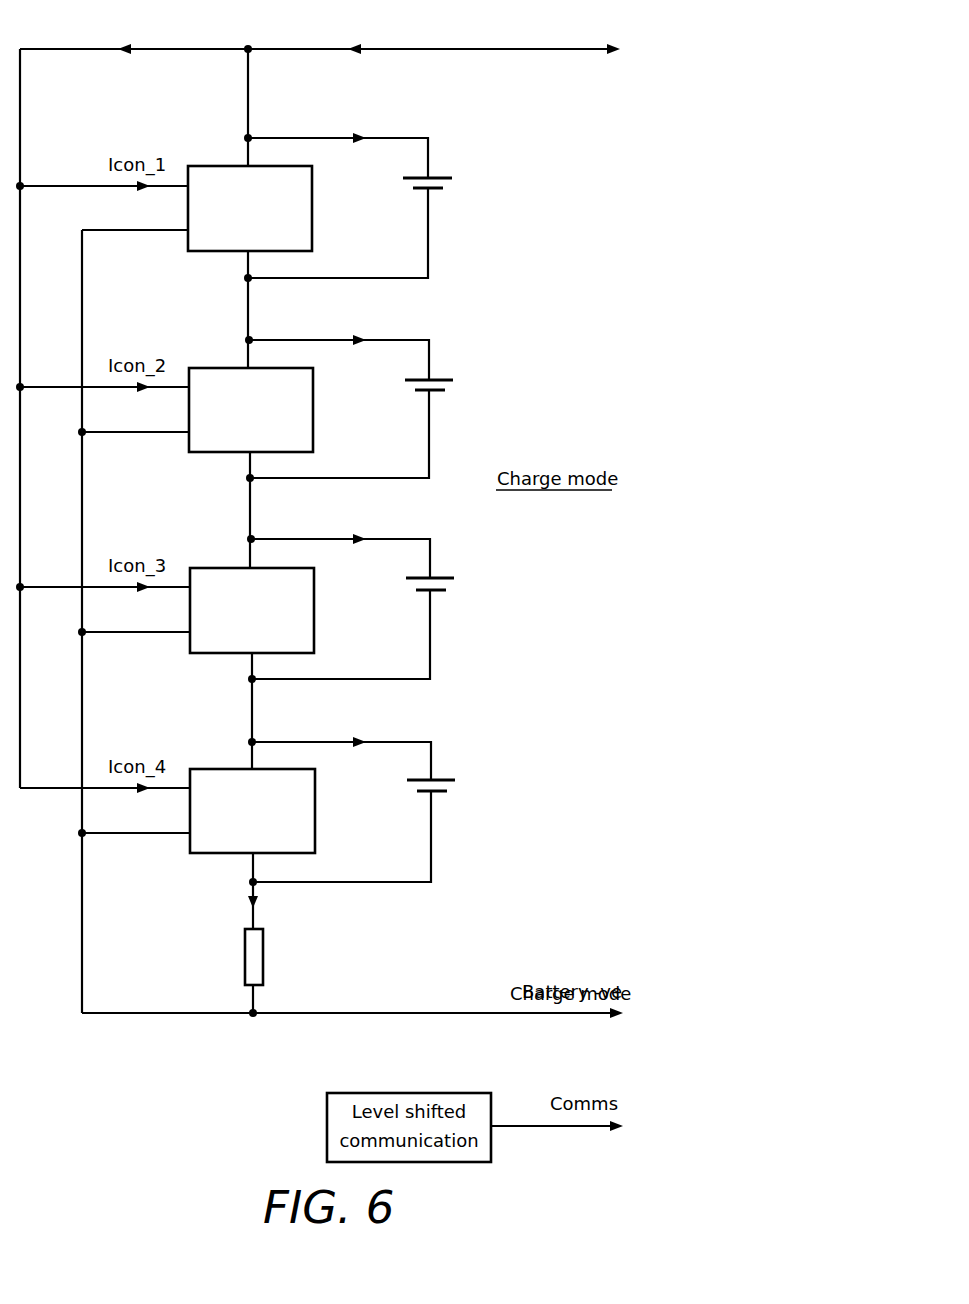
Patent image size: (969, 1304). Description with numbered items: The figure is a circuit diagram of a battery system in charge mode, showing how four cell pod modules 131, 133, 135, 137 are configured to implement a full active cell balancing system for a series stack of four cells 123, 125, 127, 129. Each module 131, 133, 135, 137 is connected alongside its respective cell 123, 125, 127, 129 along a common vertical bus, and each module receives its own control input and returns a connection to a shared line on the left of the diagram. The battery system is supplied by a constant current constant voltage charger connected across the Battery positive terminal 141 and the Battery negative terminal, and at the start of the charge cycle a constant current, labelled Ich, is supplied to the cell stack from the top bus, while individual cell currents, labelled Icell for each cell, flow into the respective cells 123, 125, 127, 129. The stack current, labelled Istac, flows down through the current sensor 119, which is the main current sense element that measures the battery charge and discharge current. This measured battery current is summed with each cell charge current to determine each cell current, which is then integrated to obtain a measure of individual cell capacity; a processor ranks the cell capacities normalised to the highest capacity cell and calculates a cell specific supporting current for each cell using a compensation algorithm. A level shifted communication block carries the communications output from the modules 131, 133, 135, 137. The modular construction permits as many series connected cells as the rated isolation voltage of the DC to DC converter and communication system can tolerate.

The battery positive terminal 141 is at (572, 50).
The cell 123 is at (444, 178).
The cell 125 is at (446, 380).
The cell 127 is at (447, 578).
The cell 129 is at (449, 780).
The module 131 is at (312, 232).
The module 133 is at (313, 433).
The module 135 is at (314, 632).
The module 137 is at (315, 834).
The current sensor 119 is at (245, 948).